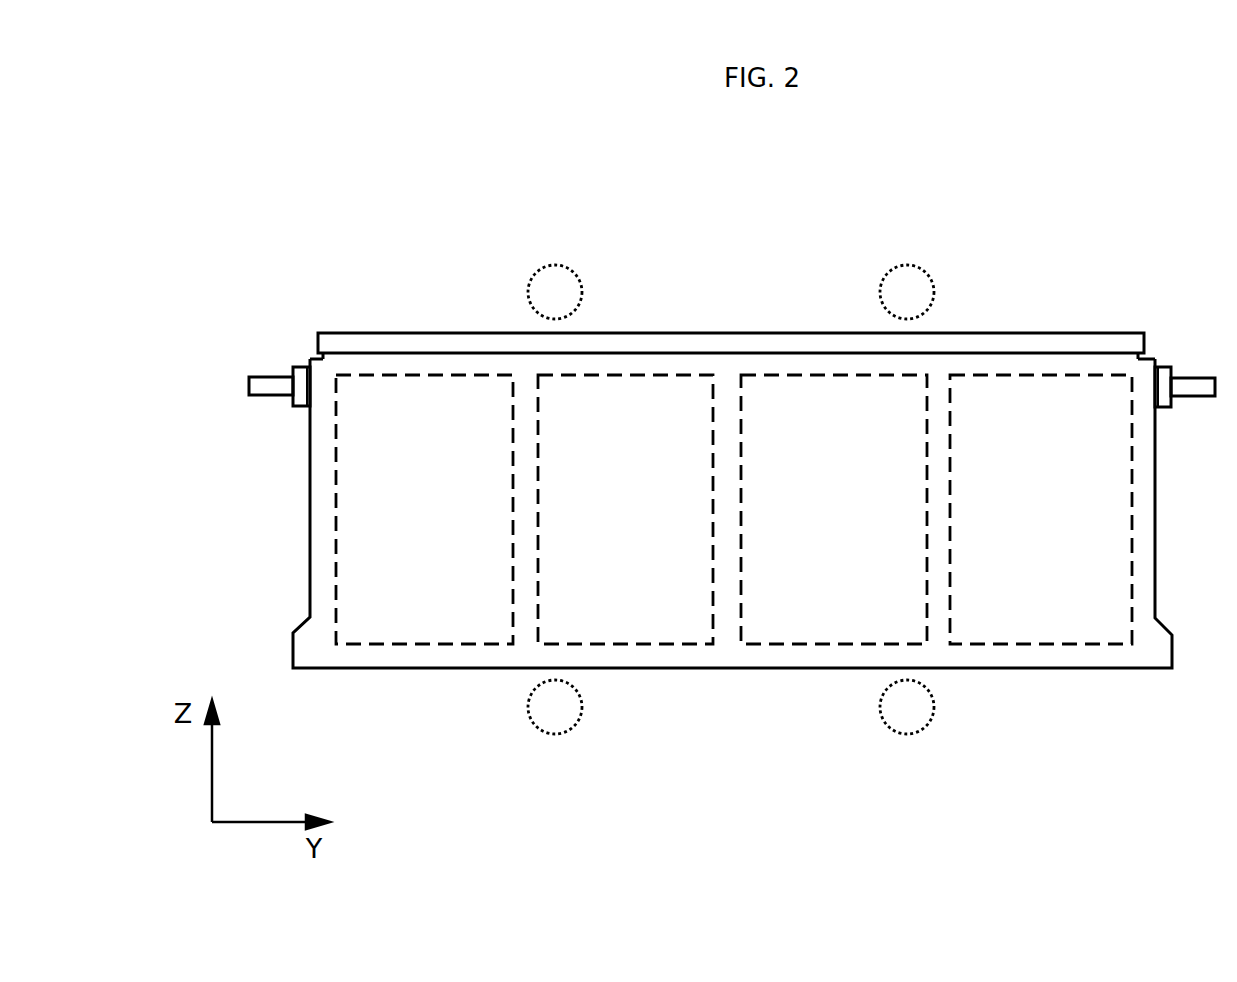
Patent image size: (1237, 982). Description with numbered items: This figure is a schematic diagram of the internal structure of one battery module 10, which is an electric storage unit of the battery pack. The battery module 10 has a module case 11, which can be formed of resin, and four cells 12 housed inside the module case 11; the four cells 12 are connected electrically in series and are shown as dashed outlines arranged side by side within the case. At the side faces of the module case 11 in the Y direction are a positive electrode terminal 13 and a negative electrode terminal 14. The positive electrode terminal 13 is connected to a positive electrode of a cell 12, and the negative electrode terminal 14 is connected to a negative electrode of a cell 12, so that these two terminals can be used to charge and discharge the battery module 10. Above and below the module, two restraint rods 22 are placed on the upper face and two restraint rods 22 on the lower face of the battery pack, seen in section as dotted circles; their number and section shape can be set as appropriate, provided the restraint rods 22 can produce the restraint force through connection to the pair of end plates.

The battery module 10 is at (684, 298).
The module case 11 is at (310, 509).
The cell 12 is at (415, 644).
The positive electrode terminal 13 is at (272, 386).
The negative electrode terminal 14 is at (1192, 386).
The restraint rod 22 is at (555, 265).